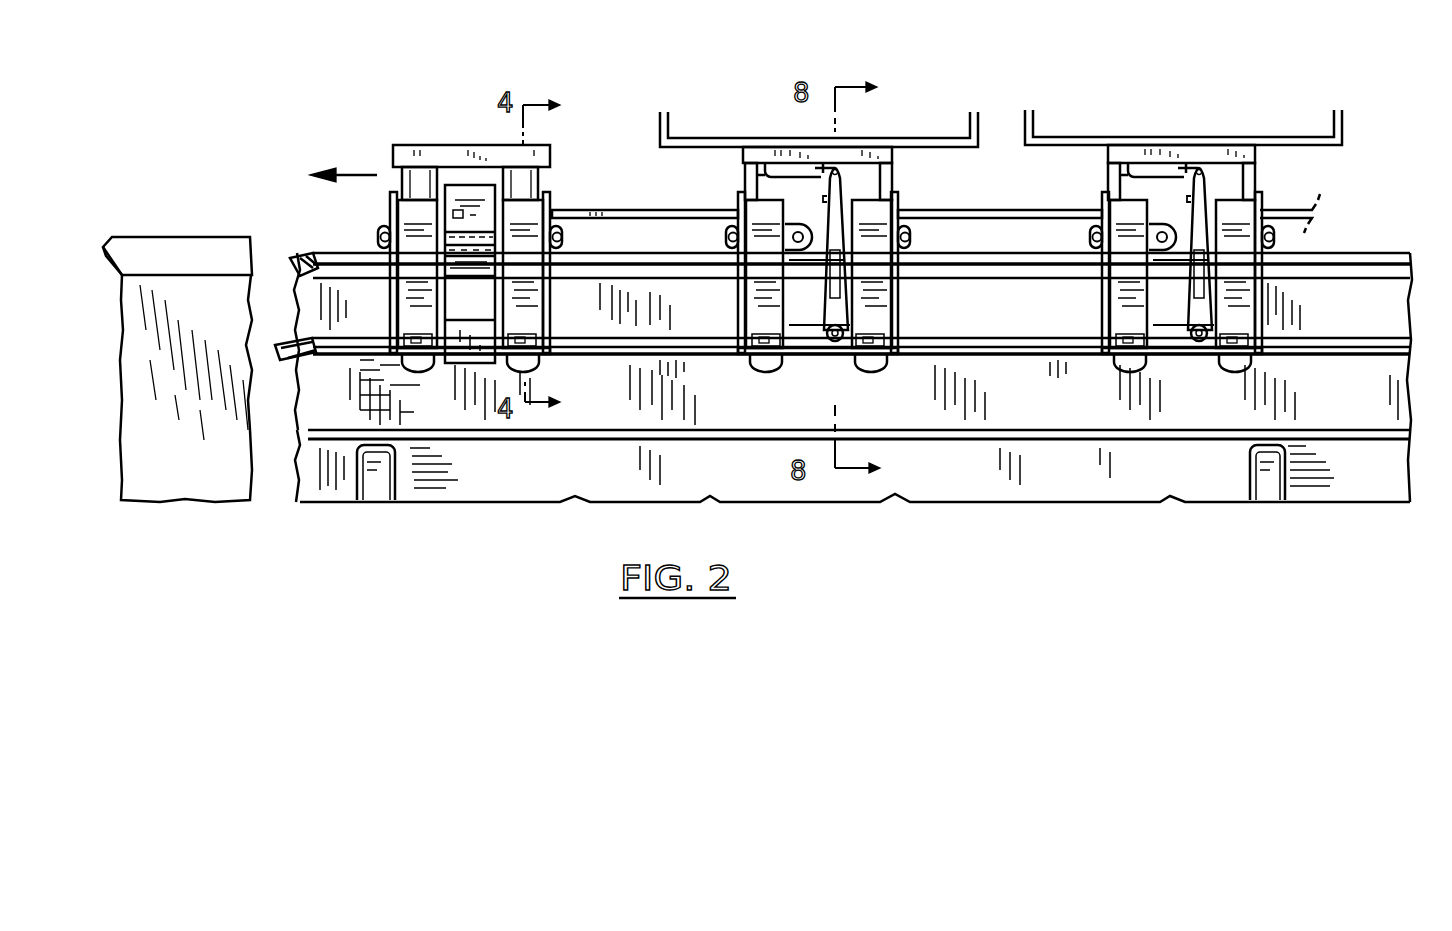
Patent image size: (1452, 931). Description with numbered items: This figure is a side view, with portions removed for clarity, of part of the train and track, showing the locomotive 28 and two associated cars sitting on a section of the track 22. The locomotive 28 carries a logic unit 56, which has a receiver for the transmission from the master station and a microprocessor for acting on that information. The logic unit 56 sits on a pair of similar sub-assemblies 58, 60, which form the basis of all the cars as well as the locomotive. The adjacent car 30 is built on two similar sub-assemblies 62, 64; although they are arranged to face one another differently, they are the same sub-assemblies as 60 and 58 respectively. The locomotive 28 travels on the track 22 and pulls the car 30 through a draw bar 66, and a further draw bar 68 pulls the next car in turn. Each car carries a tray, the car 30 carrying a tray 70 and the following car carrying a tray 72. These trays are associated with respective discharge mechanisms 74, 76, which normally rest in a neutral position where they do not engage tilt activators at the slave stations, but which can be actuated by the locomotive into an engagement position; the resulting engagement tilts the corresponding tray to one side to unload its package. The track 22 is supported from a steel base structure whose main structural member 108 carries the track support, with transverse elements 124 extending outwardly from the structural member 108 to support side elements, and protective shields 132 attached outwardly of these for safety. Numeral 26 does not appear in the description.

The track 22 is at (280, 243).
The first clamp unit 26 is at (375, 132).
The locomotive 28 is at (682, 90).
The car 30 is at (1052, 89).
The logic unit 56 is at (447, 150).
The sub-assembly 58 is at (390, 301).
The sub-assembly 60 is at (550, 301).
The sub-assembly 62 is at (739, 301).
The sub-assembly 64 is at (899, 301).
The draw bar 66 is at (640, 209).
The draw bar 68 is at (1010, 208).
The tray 70 is at (922, 137).
The tray 72 is at (1275, 136).
The discharge mechanism 74 is at (865, 245).
The discharge mechanism 76 is at (1228, 240).
The main structural member 108 is at (466, 490).
The transverse element 124 is at (356, 489).
The protective shield 132 is at (170, 240).